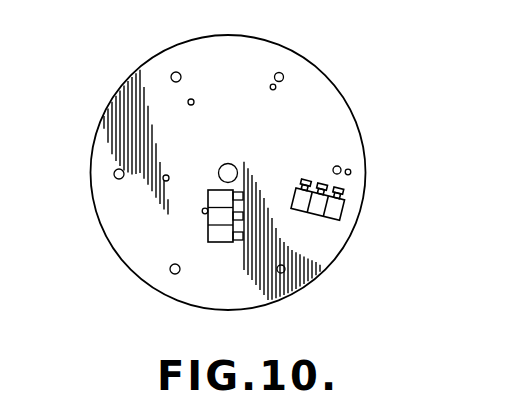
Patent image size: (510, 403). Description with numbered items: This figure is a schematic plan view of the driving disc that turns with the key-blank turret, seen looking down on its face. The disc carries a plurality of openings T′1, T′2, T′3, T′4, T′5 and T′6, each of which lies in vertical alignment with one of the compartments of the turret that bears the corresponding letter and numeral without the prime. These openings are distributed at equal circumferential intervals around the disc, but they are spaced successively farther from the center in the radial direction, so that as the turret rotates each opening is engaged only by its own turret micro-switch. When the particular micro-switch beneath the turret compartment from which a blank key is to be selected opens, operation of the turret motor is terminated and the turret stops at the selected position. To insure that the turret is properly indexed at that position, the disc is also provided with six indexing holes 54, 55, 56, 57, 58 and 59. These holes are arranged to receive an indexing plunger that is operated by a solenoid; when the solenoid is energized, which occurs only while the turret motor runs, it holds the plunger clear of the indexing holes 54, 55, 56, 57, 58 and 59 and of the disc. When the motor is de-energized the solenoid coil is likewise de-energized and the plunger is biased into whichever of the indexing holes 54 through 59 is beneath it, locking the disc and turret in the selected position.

The indexing hole 54 is at (285, 271).
The indexing hole 55 is at (171, 272).
The indexing hole 56 is at (115, 171).
The indexing hole 57 is at (172, 74).
The indexing hole 58 is at (282, 74).
The indexing hole 59 is at (341, 167).
The opening T′1 is at (245, 192).
The opening T′2 is at (202, 212).
The opening T′3 is at (163, 179).
The opening T′4 is at (191, 99).
The opening T′5 is at (276, 86).
The opening T′6 is at (351, 172).